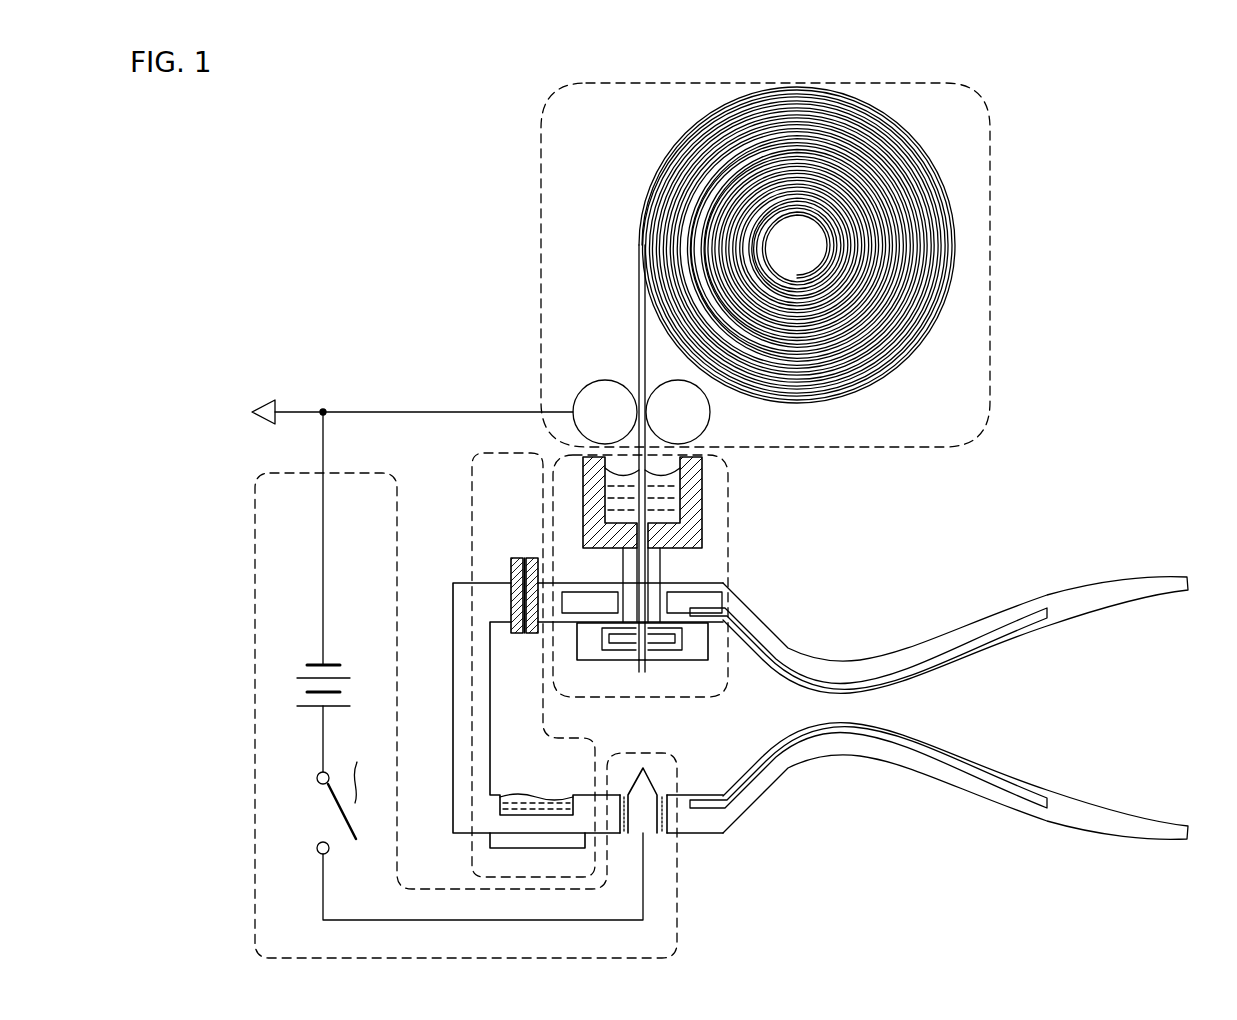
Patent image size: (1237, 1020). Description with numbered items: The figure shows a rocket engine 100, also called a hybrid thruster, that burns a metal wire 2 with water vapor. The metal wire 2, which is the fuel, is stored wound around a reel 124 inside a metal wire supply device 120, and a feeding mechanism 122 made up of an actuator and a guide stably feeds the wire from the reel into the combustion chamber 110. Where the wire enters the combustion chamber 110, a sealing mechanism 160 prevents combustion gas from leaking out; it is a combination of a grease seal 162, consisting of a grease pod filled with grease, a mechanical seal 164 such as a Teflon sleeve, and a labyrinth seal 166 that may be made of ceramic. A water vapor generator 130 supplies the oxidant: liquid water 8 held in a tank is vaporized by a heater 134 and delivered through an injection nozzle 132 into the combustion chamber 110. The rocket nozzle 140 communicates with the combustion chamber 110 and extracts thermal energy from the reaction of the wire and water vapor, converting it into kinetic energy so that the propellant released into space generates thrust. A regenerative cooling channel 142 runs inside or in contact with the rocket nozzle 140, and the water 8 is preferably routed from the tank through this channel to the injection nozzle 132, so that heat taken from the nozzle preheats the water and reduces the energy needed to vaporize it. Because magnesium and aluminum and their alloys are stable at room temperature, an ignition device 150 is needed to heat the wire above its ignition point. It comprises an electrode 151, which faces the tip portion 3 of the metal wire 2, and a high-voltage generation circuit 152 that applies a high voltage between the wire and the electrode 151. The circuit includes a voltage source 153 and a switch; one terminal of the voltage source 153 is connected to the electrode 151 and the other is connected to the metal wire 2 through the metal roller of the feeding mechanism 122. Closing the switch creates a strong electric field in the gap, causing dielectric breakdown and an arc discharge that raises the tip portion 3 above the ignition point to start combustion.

The rocket engine 100 is at (1205, 117).
The metal wire supply device 120 is at (990, 183).
The reel 124 is at (797, 243).
The metal wire 2 is at (637, 303).
The feeding mechanism 122 is at (604, 408).
The sealing mechanism 160 is at (728, 500).
The grease seal 162 is at (697, 535).
The mechanical seal 164 is at (655, 568).
The labyrinth seal 166 is at (693, 648).
The tip portion 3 is at (643, 672).
The water vapor generator 130 is at (470, 467).
The injection nozzle 132 is at (512, 558).
The water 8 is at (524, 633).
The heater 134 is at (490, 840).
The combustion chamber 110 is at (717, 767).
The electrode 151 is at (643, 822).
The rocket nozzle 140 is at (990, 820).
The regenerative cooling channel 142 is at (922, 752).
The ignition device 150 is at (680, 940).
The high-voltage generation circuit 152 is at (297, 606).
The voltage source 153 is at (352, 668).